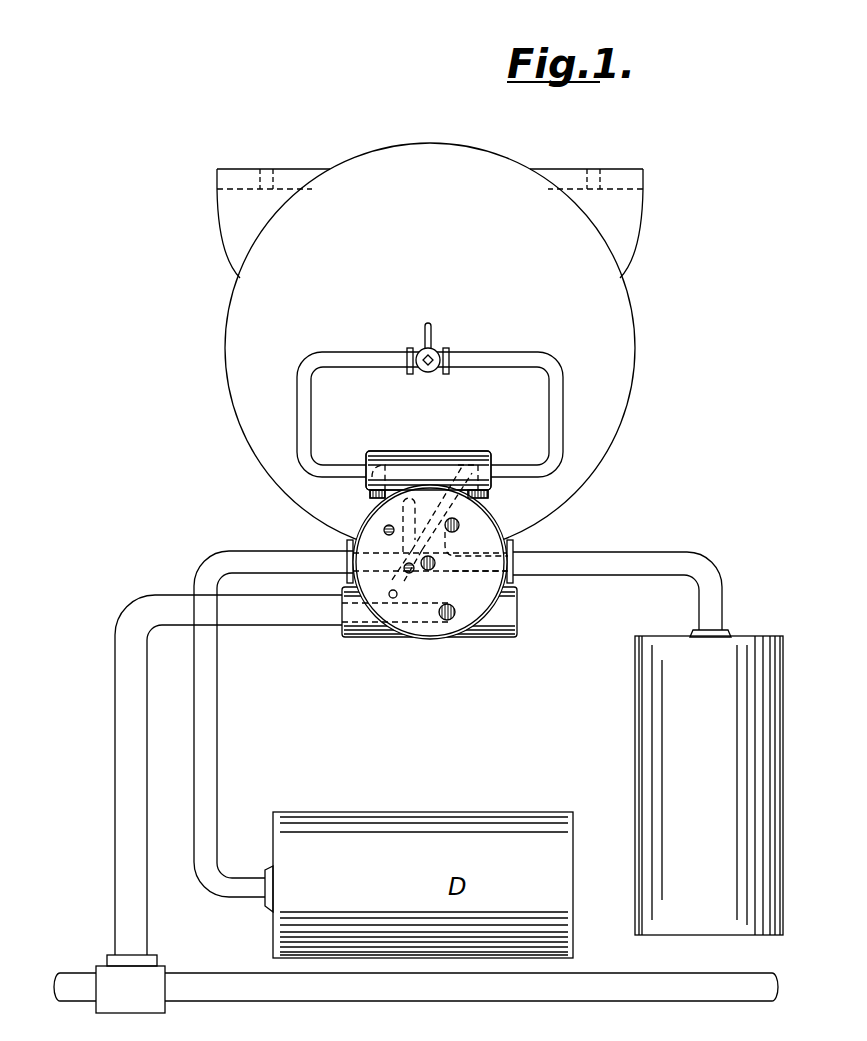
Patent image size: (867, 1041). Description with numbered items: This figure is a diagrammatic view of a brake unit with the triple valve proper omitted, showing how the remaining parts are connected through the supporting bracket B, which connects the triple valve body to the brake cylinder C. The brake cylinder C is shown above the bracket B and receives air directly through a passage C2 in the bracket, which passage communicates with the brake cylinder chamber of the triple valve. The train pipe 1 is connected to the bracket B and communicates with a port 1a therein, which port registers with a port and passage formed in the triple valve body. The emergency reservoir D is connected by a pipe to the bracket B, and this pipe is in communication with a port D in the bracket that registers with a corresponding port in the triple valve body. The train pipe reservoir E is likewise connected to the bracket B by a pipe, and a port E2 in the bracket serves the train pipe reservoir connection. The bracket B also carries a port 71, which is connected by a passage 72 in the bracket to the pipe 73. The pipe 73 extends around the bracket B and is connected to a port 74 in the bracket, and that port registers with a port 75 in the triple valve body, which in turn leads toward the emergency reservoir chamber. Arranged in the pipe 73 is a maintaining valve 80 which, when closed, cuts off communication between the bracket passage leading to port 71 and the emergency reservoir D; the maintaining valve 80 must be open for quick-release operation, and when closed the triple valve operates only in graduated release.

The brake cylinder C is at (430, 348).
The maintaining valve 80 is at (437, 352).
The supporting bracket B is at (368, 540).
The port E2 is at (460, 524).
The emergency reservoir D is at (427, 570).
The port 1a is at (447, 621).
The port 75 is at (390, 524).
The passage C2 is at (405, 565).
The port 71 is at (392, 597).
The port 74 is at (352, 468).
The passage 72 is at (450, 452).
The pipe 73 is at (510, 468).
The train pipe 1 is at (265, 618).
The train pipe reservoir E is at (709, 785).